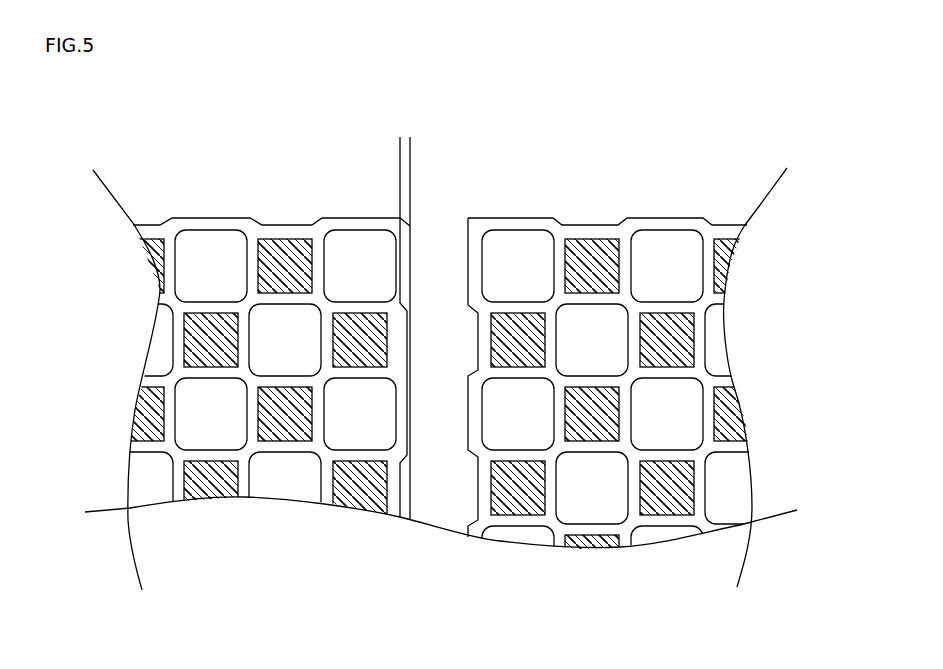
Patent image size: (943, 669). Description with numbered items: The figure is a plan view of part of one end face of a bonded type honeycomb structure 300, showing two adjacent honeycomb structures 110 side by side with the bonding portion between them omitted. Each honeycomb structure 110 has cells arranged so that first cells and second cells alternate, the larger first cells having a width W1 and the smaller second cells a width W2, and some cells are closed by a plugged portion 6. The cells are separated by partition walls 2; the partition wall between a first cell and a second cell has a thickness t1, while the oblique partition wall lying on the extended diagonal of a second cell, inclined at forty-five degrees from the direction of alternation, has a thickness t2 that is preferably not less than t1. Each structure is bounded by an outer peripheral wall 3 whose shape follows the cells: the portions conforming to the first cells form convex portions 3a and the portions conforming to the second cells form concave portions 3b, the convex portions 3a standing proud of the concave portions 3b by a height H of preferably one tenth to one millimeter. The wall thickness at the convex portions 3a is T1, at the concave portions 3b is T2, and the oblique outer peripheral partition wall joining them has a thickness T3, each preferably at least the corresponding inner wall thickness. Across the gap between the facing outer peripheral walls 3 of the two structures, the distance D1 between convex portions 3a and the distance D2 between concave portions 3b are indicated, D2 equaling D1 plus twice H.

The honeycomb structure 110 is at (187, 213).
The bonded type honeycomb structure 300 is at (798, 79).
The outer peripheral wall 3 is at (687, 216).
The convex portion 3a is at (280, 225).
The concave portion 3b is at (478, 317).
The partition wall 2 is at (547, 256).
The plugged portion 6 is at (668, 485).
The height of convex portion H is at (367, 165).
The width of first cell W1 is at (238, 281).
The width of second cell W2 is at (304, 415).
The partition wall thickness t1 is at (283, 262).
The thickness of oblique partition wall t2 is at (220, 407).
The partition wall thickness at convex portion T1 is at (363, 410).
The partition wall thickness at concave portion T2 is at (352, 328).
The thickness of oblique outer peripheral partition wall T3 is at (395, 373).
The distance between convex portions D1 is at (468, 487).
The distance between concave portions D2 is at (470, 506).